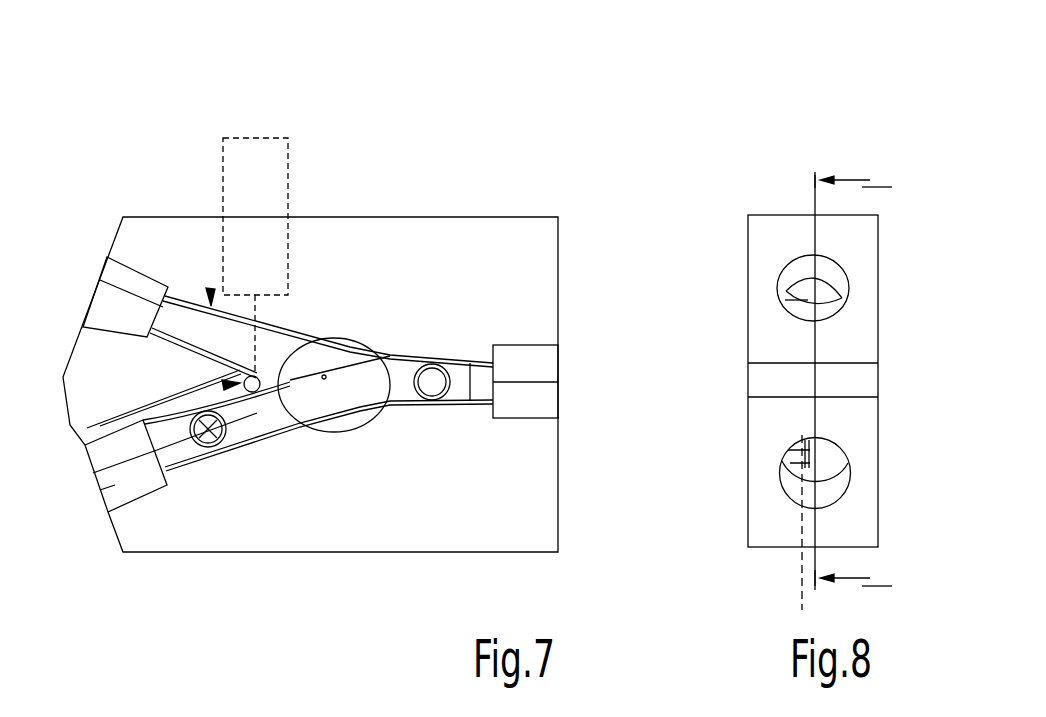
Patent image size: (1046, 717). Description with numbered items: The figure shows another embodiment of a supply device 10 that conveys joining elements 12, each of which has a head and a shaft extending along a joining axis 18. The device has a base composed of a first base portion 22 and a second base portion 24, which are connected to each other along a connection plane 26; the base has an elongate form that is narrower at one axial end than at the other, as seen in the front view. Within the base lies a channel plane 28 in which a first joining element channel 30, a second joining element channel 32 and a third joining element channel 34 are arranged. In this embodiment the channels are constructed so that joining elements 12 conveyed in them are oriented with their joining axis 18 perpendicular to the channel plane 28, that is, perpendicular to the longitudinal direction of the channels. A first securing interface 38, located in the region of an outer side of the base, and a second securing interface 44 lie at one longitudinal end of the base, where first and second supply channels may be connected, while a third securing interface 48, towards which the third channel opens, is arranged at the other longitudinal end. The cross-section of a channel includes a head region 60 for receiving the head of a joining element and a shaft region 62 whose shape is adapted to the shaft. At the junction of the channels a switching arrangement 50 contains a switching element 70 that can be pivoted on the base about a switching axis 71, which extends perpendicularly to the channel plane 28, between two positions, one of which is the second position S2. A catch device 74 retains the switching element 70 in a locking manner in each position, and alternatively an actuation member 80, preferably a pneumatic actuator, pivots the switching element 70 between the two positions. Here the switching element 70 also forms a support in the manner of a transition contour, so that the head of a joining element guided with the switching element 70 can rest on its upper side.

In FIG. 7, the supply device 10 is at (554, 165).
In FIG. 8, the supply device 10 is at (793, 181).
In FIG. 7, the joining element 12 is at (432, 384).
In FIG. 7, the joining axis 18 is at (230, 430).
In FIG. 8, the first base portion 22 is at (763, 318).
In FIG. 8, the second base portion 24 is at (857, 334).
In FIG. 8, the connection plane 26 is at (820, 418).
In FIG. 8, the channel plane 28 is at (802, 576).
In FIG. 7, the first joining element channel 30 is at (183, 330).
In FIG. 8, the first joining element channel 30 is at (793, 318).
In FIG. 7, the second joining element channel 32 is at (193, 457).
In FIG. 8, the second joining element channel 32 is at (797, 465).
In FIG. 7, the third joining element channel 34 is at (470, 377).
In FIG. 7, the first securing interface 38 is at (118, 286).
In FIG. 8, the first securing interface 38 is at (798, 272).
In FIG. 7, the second securing interface 44 is at (100, 490).
In FIG. 8, the second securing interface 44 is at (797, 484).
In FIG. 7, the third securing interface 48 is at (533, 362).
In FIG. 7, the switching arrangement 50 is at (350, 330).
In FIG. 7, the head region 60 is at (210, 304).
In FIG. 8, the head region 60 is at (787, 318).
In FIG. 7, the shaft region 62 is at (238, 383).
In FIG. 8, the shaft region 62 is at (800, 315).
In FIG. 7, the switching element 70 is at (321, 378).
In FIG. 7, the switching axis 71 is at (277, 430).
In FIG. 7, the catch device 74 is at (87, 428).
In FIG. 7, the actuation member 80 is at (258, 162).
In FIG. 7, the second position S2 is at (325, 377).